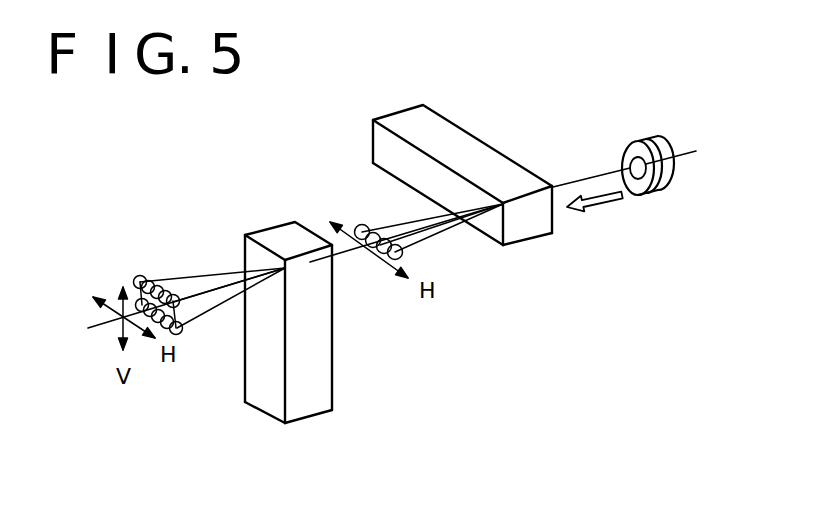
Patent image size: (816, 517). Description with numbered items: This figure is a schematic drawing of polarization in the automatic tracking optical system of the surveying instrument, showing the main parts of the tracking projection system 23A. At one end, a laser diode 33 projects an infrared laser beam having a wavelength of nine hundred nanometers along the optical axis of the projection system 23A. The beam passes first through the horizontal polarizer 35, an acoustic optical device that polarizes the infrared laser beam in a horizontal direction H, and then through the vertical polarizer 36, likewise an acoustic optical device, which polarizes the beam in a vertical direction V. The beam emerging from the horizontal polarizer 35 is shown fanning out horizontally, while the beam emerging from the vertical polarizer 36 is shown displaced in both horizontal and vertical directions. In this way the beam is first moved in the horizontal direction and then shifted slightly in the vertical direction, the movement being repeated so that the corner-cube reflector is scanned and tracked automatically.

The tracking projection system 23A is at (549, 133).
The laser diode 33 is at (657, 131).
The horizontal polarizer 35 is at (470, 150).
The vertical polarizer 36 is at (325, 364).